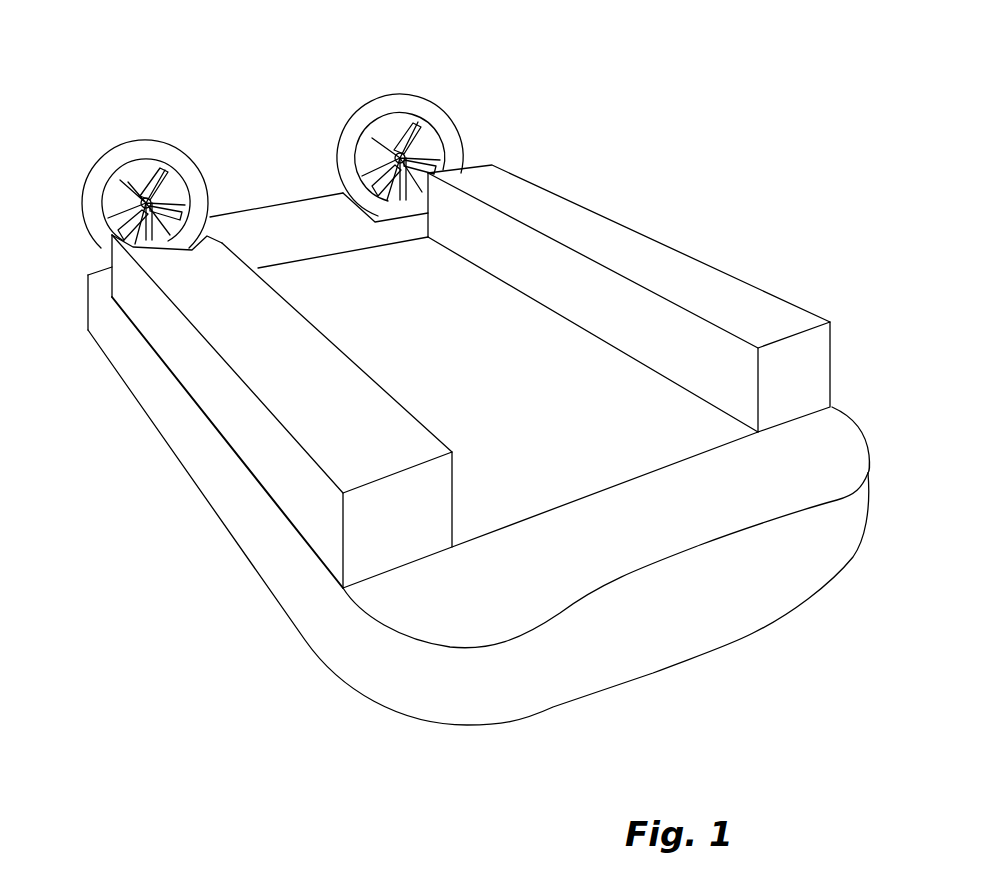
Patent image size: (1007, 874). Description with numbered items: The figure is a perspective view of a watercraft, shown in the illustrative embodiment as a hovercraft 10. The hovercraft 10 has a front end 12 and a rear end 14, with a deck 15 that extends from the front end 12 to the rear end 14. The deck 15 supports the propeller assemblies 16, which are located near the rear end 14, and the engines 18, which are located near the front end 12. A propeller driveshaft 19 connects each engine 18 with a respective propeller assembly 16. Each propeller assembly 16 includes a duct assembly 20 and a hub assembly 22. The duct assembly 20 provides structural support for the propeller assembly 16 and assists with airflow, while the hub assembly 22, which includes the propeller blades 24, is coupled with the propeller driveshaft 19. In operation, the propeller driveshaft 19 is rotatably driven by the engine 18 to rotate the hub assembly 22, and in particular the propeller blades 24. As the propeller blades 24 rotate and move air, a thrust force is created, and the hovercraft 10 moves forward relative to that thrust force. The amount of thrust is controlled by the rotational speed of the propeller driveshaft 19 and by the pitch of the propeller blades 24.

The hovercraft 10 is at (711, 151).
The front end 12 is at (663, 629).
The rear end 14 is at (291, 192).
The deck 15 is at (512, 392).
The propeller assembly 16 is at (150, 150).
The engine 18 is at (337, 381).
The propeller driveshaft 19 is at (207, 238).
The duct assembly 20 is at (109, 176).
The hub assembly 22 is at (157, 185).
The propeller blades 24 is at (140, 197).